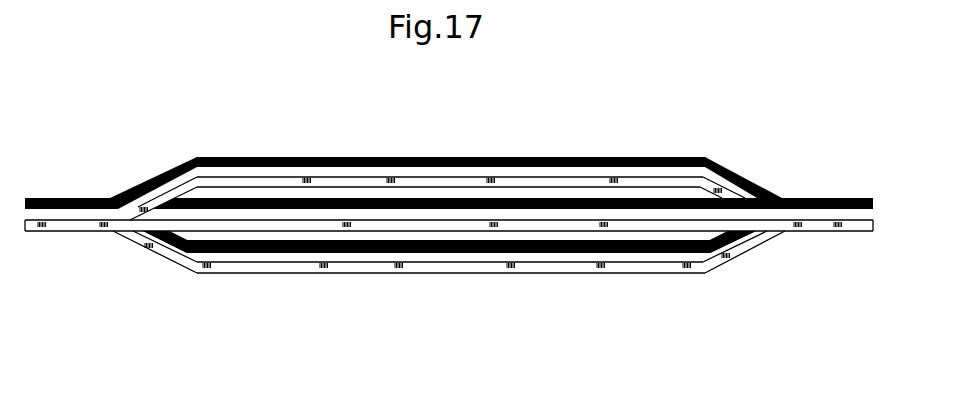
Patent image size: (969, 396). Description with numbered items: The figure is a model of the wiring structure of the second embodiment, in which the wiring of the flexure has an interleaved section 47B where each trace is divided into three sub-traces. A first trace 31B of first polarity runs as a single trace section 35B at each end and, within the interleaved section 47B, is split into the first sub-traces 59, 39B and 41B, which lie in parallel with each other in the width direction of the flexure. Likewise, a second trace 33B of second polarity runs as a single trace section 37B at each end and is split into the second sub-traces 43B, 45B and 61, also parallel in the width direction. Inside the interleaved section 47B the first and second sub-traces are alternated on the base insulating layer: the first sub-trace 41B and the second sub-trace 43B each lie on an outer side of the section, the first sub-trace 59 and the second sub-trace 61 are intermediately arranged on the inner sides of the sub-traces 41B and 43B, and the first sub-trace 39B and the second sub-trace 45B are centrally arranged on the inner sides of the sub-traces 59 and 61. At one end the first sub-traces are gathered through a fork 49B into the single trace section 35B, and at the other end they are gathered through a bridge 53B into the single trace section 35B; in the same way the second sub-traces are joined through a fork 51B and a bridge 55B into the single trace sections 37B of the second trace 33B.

The first trace 31B is at (172, 168).
The second trace 33B is at (170, 262).
The single trace section 35B is at (70, 198).
The single trace section 37B is at (45, 231).
The first sub-trace 39B is at (337, 198).
The first sub-trace 41B is at (288, 157).
The second sub-trace 43B is at (645, 273).
The second sub-trace 45B is at (566, 231).
The interleaved section 47B is at (667, 124).
The fork 49B is at (748, 180).
The fork 51B is at (140, 245).
The bridge 53B is at (137, 195).
The bridge 55B is at (750, 250).
The first sub-trace 59 is at (440, 239).
The second sub-trace 61 is at (492, 231).